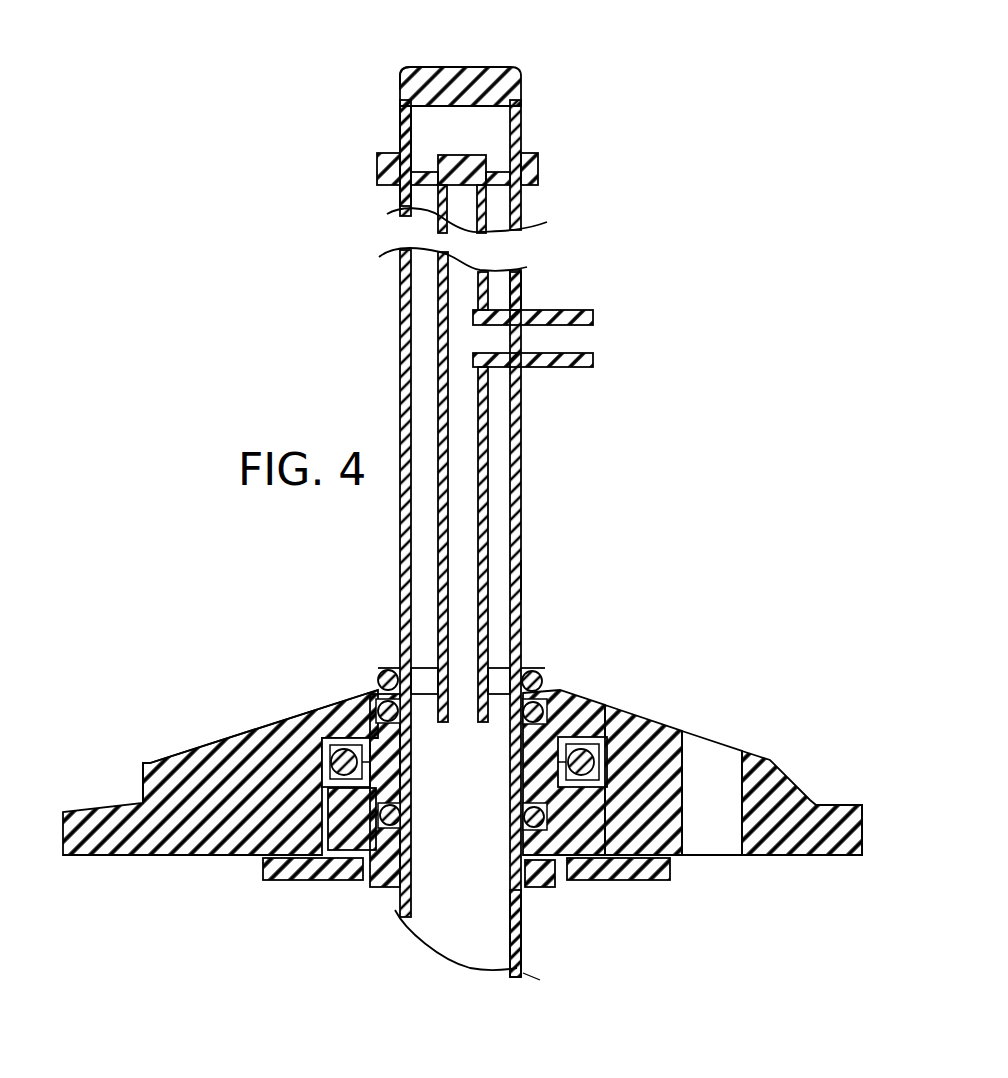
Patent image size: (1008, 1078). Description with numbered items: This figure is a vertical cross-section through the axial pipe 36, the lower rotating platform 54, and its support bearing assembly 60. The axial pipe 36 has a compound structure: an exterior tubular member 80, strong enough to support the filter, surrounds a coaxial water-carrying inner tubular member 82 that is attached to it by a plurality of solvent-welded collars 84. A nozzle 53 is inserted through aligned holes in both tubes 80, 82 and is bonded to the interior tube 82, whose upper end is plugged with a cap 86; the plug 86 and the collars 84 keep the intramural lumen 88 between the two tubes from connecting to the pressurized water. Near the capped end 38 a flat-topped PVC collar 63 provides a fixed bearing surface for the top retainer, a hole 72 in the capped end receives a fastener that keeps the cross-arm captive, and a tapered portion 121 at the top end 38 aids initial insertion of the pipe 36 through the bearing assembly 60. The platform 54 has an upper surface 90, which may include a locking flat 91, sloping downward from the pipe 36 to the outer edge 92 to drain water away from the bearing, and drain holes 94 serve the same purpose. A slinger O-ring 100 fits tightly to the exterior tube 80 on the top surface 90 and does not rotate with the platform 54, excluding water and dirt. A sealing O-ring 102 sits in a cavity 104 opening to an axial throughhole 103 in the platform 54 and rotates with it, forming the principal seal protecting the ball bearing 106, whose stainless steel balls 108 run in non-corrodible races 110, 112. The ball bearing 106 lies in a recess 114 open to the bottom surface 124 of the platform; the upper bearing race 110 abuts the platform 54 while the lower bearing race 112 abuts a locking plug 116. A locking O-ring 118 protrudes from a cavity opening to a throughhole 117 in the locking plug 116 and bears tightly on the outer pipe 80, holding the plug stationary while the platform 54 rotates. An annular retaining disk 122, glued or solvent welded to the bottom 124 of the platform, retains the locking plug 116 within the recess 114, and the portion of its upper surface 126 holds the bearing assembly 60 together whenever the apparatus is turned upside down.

The axial pipe 36 is at (521, 583).
The capped end 38 is at (397, 115).
The nozzle 53 is at (585, 310).
The rotating platform 54 is at (197, 744).
The bearing assembly 60 is at (630, 610).
The PVC collar 63 is at (533, 156).
The hole 72 is at (487, 68).
The exterior tubular member 80 is at (520, 541).
The inner tubular member 82 is at (438, 364).
The solvent-welded collars 84 is at (500, 185).
The cap 86 is at (457, 157).
The intramural lumen 88 is at (500, 472).
The upper surface 90 is at (216, 740).
The locking flat 91 is at (141, 786).
The outer edge 92 is at (865, 858).
The drain holes 94 is at (720, 840).
The slinger O-ring 100 is at (382, 671).
The sealing O-ring 102 is at (557, 718).
The axial throughhole 103 is at (523, 745).
The cavity 104 is at (588, 720).
The ball bearing 106 is at (663, 738).
The stainless steel balls 108 is at (331, 750).
The upper bearing race 110 is at (597, 757).
The lower bearing race 112 is at (323, 740).
The recess 114 is at (570, 882).
The locking plug 116 is at (401, 811).
The throughhole 117 is at (523, 890).
The locking O-ring 118 is at (524, 822).
The tapered portion 121 is at (400, 79).
The annular retaining disk 122 is at (633, 880).
The bottom surface 124 is at (275, 882).
The upper surface of the retaining disk 126 is at (362, 875).